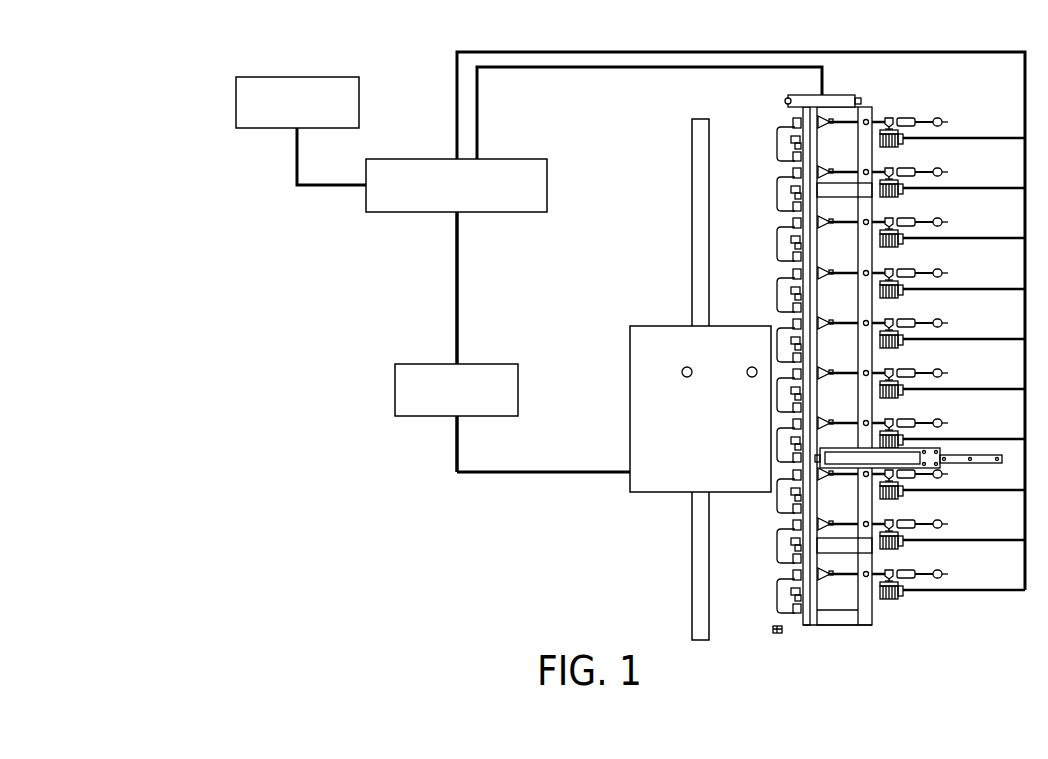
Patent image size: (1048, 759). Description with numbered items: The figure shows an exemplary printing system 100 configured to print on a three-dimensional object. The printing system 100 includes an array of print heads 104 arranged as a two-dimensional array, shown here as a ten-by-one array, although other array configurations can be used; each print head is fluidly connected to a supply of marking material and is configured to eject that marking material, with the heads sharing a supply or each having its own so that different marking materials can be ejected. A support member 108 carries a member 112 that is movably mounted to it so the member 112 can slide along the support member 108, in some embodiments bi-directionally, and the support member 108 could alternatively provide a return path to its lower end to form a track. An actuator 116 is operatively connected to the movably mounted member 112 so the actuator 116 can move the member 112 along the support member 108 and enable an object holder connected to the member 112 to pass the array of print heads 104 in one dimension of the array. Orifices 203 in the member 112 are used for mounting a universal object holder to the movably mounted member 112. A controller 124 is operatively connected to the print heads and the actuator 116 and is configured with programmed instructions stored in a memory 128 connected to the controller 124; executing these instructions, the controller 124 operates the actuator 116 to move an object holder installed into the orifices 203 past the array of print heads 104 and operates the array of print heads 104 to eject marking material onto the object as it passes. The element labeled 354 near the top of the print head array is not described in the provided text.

The printing system 100 is at (403, 40).
The array of print heads 104 is at (770, 215).
The support member 108 is at (692, 550).
The member 112 is at (630, 410).
The actuator 116 is at (428, 416).
The controller 124 is at (498, 212).
The memory 128 is at (236, 102).
The orifices 203 is at (684, 367).
The mounting bracket 354 is at (848, 95).